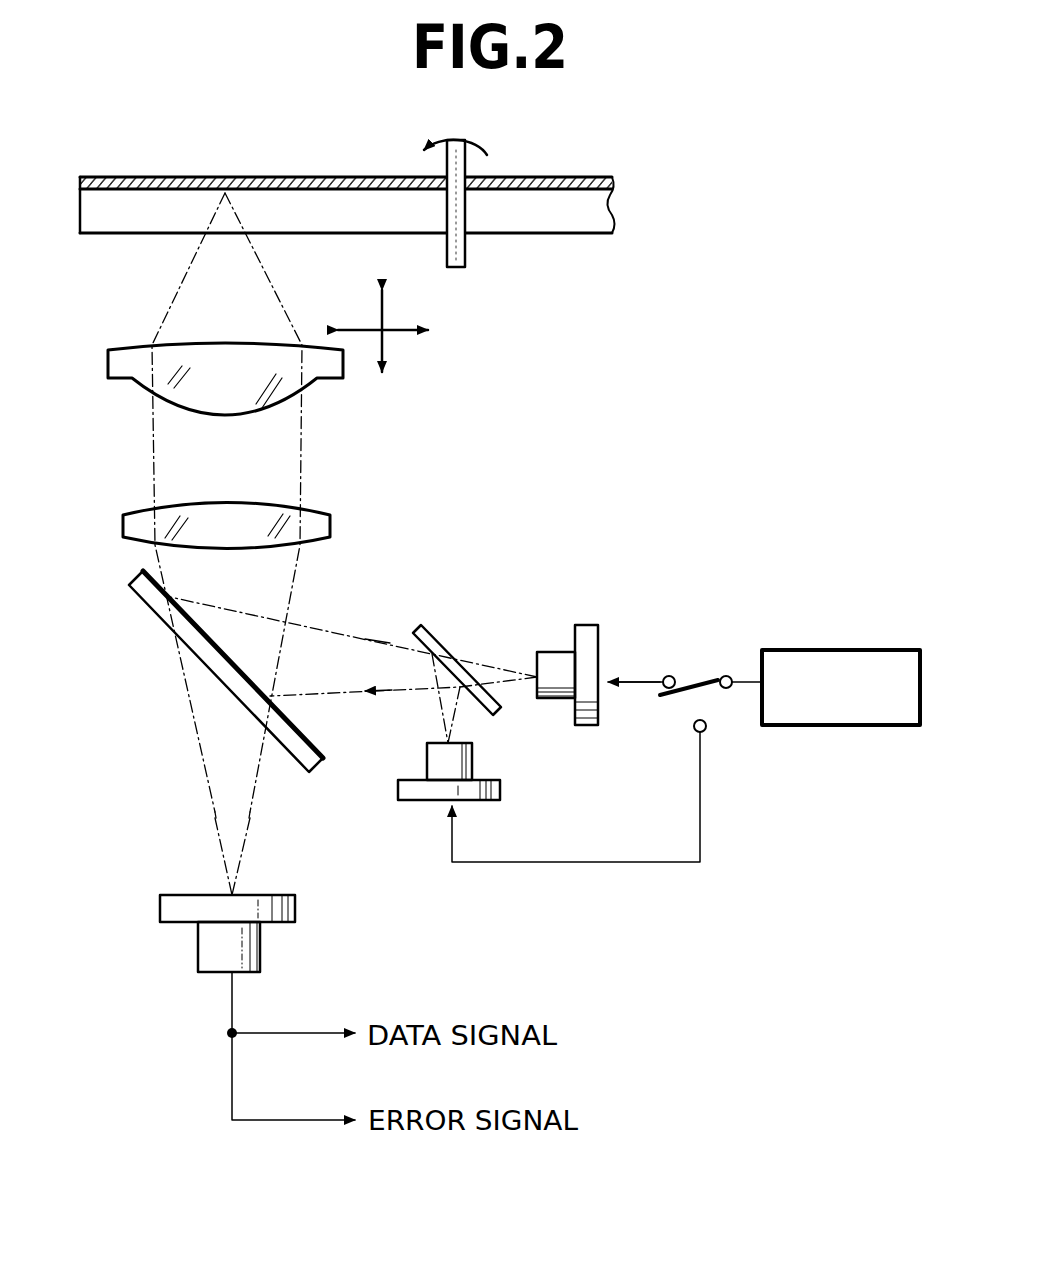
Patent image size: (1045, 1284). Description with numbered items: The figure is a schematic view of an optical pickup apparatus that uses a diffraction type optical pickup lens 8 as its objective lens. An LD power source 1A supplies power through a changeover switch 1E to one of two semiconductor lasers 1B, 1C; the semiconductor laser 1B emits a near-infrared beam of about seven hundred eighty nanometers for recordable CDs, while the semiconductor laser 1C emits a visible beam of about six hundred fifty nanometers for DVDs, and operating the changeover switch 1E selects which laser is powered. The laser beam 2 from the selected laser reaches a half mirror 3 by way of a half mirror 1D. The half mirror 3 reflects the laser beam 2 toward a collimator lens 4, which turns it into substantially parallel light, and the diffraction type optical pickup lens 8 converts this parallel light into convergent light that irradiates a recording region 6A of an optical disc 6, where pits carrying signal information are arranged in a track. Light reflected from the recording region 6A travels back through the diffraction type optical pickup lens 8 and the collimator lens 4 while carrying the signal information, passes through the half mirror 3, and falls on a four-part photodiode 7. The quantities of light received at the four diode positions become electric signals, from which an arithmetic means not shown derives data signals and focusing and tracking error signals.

The LD power source 1A is at (832, 650).
The semiconductor laser 1B is at (553, 652).
The semiconductor laser 1C is at (475, 758).
The half mirror 1D is at (437, 638).
The changeover switch 1E is at (688, 677).
The laser beam 2 is at (325, 630).
The half mirror 3 is at (152, 601).
The collimator lens 4 is at (134, 520).
The optical disc 6 is at (120, 216).
The recording region 6A is at (164, 177).
The four-part photodiode 7 is at (280, 895).
The diffraction type optical pickup lens 8 is at (134, 353).